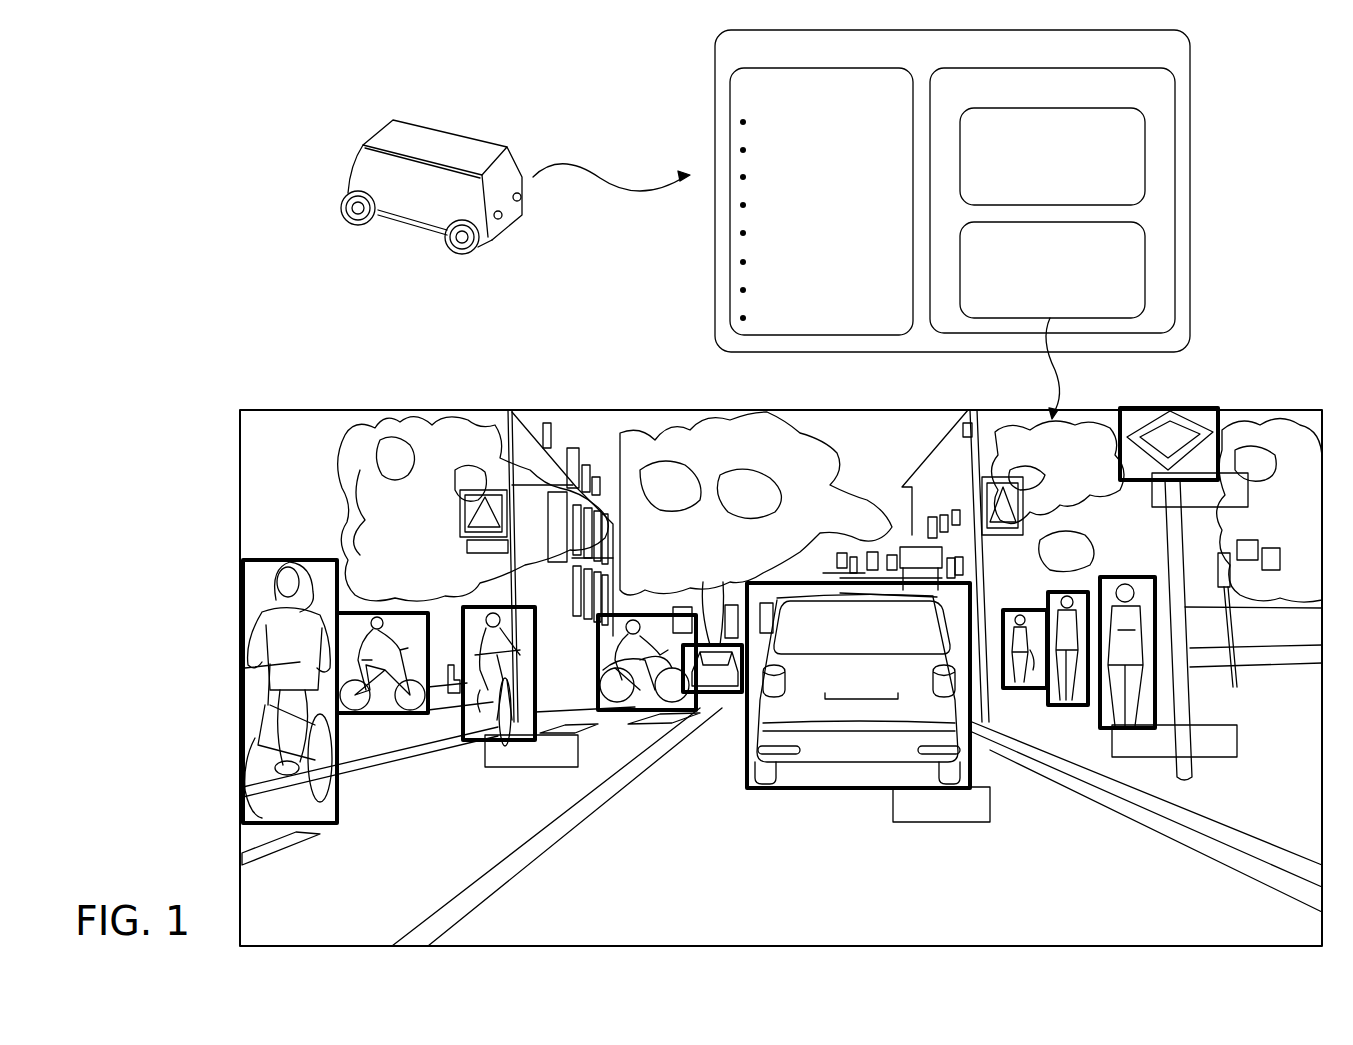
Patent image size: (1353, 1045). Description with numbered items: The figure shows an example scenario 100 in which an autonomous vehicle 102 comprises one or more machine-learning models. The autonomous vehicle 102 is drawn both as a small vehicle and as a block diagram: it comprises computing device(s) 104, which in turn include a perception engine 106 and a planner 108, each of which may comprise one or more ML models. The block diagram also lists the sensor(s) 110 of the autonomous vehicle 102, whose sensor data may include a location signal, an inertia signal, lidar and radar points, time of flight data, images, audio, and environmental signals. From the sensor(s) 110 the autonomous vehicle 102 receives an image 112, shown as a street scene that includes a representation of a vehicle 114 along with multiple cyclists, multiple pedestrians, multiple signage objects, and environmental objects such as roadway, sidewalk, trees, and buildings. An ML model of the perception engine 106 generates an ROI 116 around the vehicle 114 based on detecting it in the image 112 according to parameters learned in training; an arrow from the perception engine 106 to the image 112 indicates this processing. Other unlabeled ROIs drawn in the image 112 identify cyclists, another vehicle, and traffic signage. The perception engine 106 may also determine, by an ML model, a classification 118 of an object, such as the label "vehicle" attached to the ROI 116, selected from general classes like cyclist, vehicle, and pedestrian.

The example scenario 100 is at (183, 90).
The autonomous vehicle 102 is at (415, 143).
The computing device(s) 104 is at (1160, 101).
The perception engine 106 is at (1068, 295).
The planner 108 is at (1108, 168).
The sensor(s) 110 is at (883, 101).
The image 112 is at (412, 410).
The vehicle 114 is at (873, 685).
The ROI 116 is at (838, 789).
The classification 118 is at (940, 822).